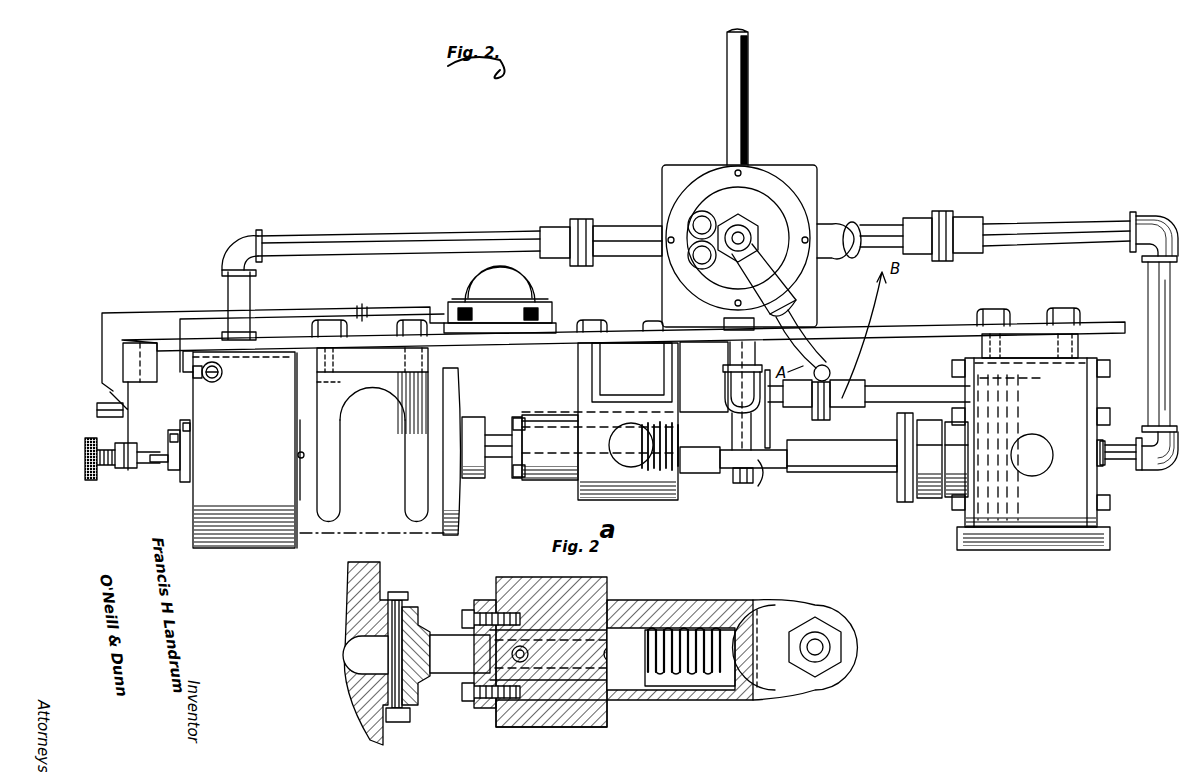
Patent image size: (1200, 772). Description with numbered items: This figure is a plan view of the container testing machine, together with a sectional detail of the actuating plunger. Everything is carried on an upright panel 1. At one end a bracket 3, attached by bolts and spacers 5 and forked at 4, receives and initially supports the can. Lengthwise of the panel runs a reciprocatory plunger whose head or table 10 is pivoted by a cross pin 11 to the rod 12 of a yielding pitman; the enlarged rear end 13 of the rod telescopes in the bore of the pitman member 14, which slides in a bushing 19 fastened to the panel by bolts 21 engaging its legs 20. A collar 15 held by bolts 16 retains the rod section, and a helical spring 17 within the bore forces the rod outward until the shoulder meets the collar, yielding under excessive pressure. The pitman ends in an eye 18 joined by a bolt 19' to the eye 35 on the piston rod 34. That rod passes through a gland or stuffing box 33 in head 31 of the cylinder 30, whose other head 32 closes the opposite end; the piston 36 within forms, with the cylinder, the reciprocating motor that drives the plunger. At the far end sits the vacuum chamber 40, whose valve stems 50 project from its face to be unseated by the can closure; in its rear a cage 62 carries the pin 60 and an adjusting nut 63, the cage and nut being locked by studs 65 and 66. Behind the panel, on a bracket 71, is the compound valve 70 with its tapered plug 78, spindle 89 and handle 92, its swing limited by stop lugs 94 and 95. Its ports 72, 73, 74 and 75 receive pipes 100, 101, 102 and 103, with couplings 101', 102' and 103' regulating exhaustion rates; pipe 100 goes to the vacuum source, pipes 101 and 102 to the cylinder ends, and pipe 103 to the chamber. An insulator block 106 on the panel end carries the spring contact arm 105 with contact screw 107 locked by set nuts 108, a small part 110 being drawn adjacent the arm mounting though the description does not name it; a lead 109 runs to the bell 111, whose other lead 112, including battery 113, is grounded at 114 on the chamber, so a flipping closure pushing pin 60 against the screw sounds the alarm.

In FIG. 2, the panel 1 is at (545, 340).
In FIG. 2, the bracket 3 is at (375, 388).
In FIG. 2, the fork 4 is at (403, 470).
In FIG. 2, the bolts and spacers 5 is at (430, 362).
In FIG. 2, the head or table element 10 is at (462, 510).
In FIG. 2A, the head or table element 10 is at (358, 680).
In FIG. 2A, the cross pin 11 is at (402, 598).
In FIG. 2, the rod 12 is at (488, 432).
In FIG. 2A, the rod 12 is at (462, 675).
In FIG. 2A, the rear end of the rod 13 is at (528, 722).
In FIG. 2, the pitman member 14 is at (560, 418).
In FIG. 2A, the pitman member 14 is at (690, 605).
In FIG. 2, the collar 15 is at (524, 416).
In FIG. 2A, the collar 15 is at (484, 700).
In FIG. 2A, the bolts 16 is at (462, 614).
In FIG. 2A, the helical spring 17 is at (702, 676).
In FIG. 2A, the eye 18 is at (780, 604).
In FIG. 2, the bushing 19 is at (600, 433).
In FIG. 2A, the bushing 19 is at (581, 637).
In FIG. 2, the bolt 19' is at (739, 497).
In FIG. 2A, the bolt 19' is at (848, 644).
In FIG. 2, the legs 20 is at (656, 366).
In FIG. 2, the bolts 21 is at (600, 322).
In FIG. 2, the cylinder 30 is at (1040, 550).
In FIG. 2, the cylinder head 31 is at (968, 520).
In FIG. 2, the cylinder head 32 is at (1100, 530).
In FIG. 2, the gland or stuffing box 33 is at (926, 498).
In FIG. 2, the piston rod 34 is at (856, 474).
In FIG. 2, the eye 35 is at (770, 470).
In FIG. 2, the piston 36 is at (1008, 432).
In FIG. 2, the vacuum chamber 40 is at (254, 545).
In FIG. 2, the valve stem 50 is at (308, 450).
In FIG. 2, the pin 60 is at (160, 464).
In FIG. 2, the cage 62 is at (182, 452).
In FIG. 2, the adjusting nut 63 is at (186, 478).
In FIG. 2, the stud or bolt 65 is at (192, 426).
In FIG. 2, the stud or bolt 66 is at (190, 438).
In FIG. 2, the compound valve 70 is at (670, 206).
In FIG. 2, the bracket 71 is at (800, 180).
In FIG. 2, the port 72 is at (746, 182).
In FIG. 2, the port 73 is at (810, 238).
In FIG. 2, the port 74 is at (724, 314).
In FIG. 2, the port 75 is at (667, 246).
In FIG. 2, the valve plug 78 is at (790, 207).
In FIG. 2, the valve spindle 89 is at (745, 232).
In FIG. 2, the handle 92 is at (778, 272).
In FIG. 2, the stop lug 94 is at (730, 350).
In FIG. 2, the stop lug 95 is at (824, 254).
In FIG. 2, the pipe 100 is at (748, 122).
In FIG. 2, the pipe 101 is at (1080, 335).
In FIG. 2, the coupling member 101' is at (921, 220).
In FIG. 2, the pipe 102 is at (869, 386).
In FIG. 2, the coupling member 102' is at (865, 381).
In FIG. 2, the pipe 103 is at (381, 285).
In FIG. 2, the coupling member 103' is at (601, 221).
In FIG. 2, the spring contact arm 105 is at (130, 425).
In FIG. 2, the insulator block 106 is at (123, 368).
In FIG. 2, the contact screw 107 is at (108, 468).
In FIG. 2, the set nuts 108 is at (128, 470).
In FIG. 2, the lead 109 is at (102, 348).
In FIG. 2, the sleeve 110 is at (112, 418).
In FIG. 2, the electric bell or buzzer 111 is at (528, 314).
In FIG. 2, the lead 112 is at (392, 316).
In FIG. 2, the battery 113 is at (362, 304).
In FIG. 2, the ground 114 is at (213, 383).